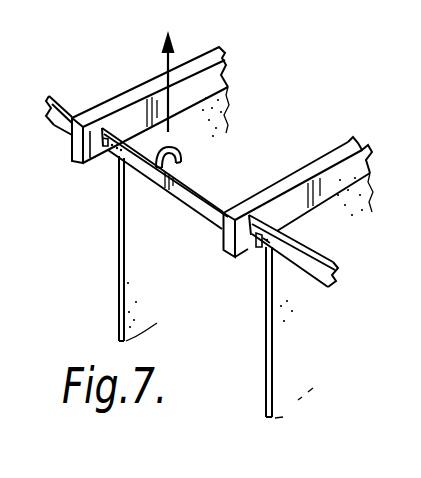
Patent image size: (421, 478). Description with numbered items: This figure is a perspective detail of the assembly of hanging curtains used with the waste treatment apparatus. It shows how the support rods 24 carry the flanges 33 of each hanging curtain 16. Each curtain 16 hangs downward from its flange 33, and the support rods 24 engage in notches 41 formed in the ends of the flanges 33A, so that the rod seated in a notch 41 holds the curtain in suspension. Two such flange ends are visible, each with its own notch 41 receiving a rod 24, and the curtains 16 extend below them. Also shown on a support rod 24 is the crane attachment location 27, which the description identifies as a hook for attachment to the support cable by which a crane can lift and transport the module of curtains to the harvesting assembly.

The hanging curtain 16 is at (280, 368).
The support rod 24 is at (205, 199).
The hook 27 is at (183, 151).
The flange 33 is at (350, 141).
The flange end 33A is at (212, 51).
The notch 41 is at (106, 144).